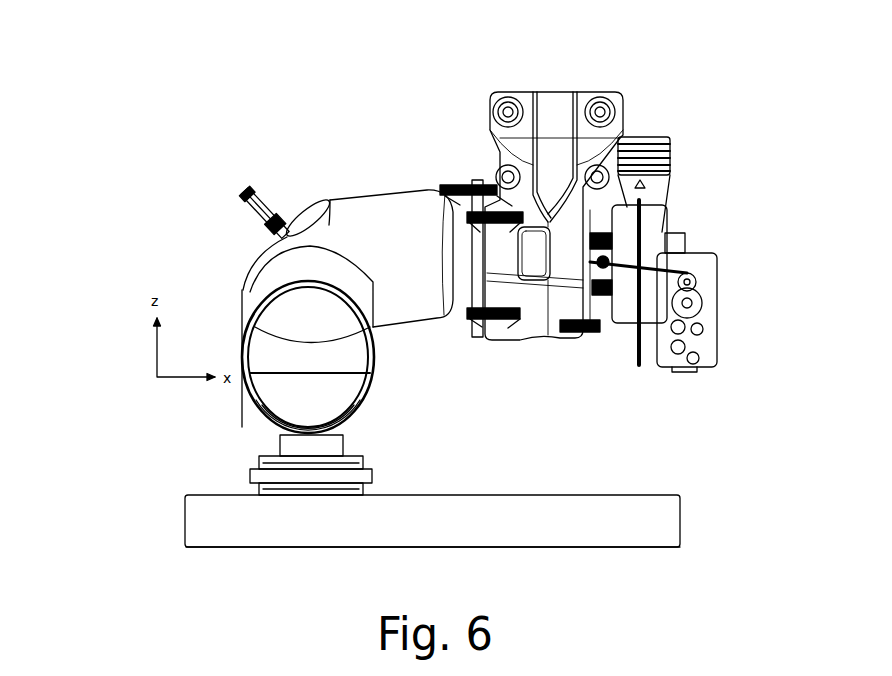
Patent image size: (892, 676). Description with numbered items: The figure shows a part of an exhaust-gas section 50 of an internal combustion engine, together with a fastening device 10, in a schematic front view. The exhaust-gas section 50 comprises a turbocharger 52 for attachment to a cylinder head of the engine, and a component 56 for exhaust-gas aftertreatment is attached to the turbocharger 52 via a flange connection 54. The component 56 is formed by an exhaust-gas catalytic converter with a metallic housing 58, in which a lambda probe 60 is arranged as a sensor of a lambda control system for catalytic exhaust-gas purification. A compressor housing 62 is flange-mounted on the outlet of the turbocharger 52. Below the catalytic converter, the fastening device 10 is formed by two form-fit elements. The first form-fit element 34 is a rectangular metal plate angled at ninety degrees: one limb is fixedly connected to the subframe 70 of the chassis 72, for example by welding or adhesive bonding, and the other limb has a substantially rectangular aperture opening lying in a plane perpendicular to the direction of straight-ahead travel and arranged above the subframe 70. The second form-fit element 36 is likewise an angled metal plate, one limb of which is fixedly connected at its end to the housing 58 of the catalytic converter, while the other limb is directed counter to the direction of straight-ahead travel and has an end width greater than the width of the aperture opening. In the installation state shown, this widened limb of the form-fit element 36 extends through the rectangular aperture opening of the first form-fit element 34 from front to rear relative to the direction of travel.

The fastening device 10 is at (399, 428).
The first form-fit element 34 is at (367, 458).
The second form-fit element 36 is at (273, 443).
The exhaust-gas section 50 is at (198, 148).
The turbocharger 52 is at (562, 112).
The flange connection 54 is at (466, 165).
The component for exhaust-gas aftertreatment 56 is at (334, 199).
The housing 58 is at (263, 282).
The lambda probe 60 is at (257, 210).
The compressor housing 62 is at (699, 209).
The subframe 70 is at (217, 527).
The chassis 72 is at (521, 557).